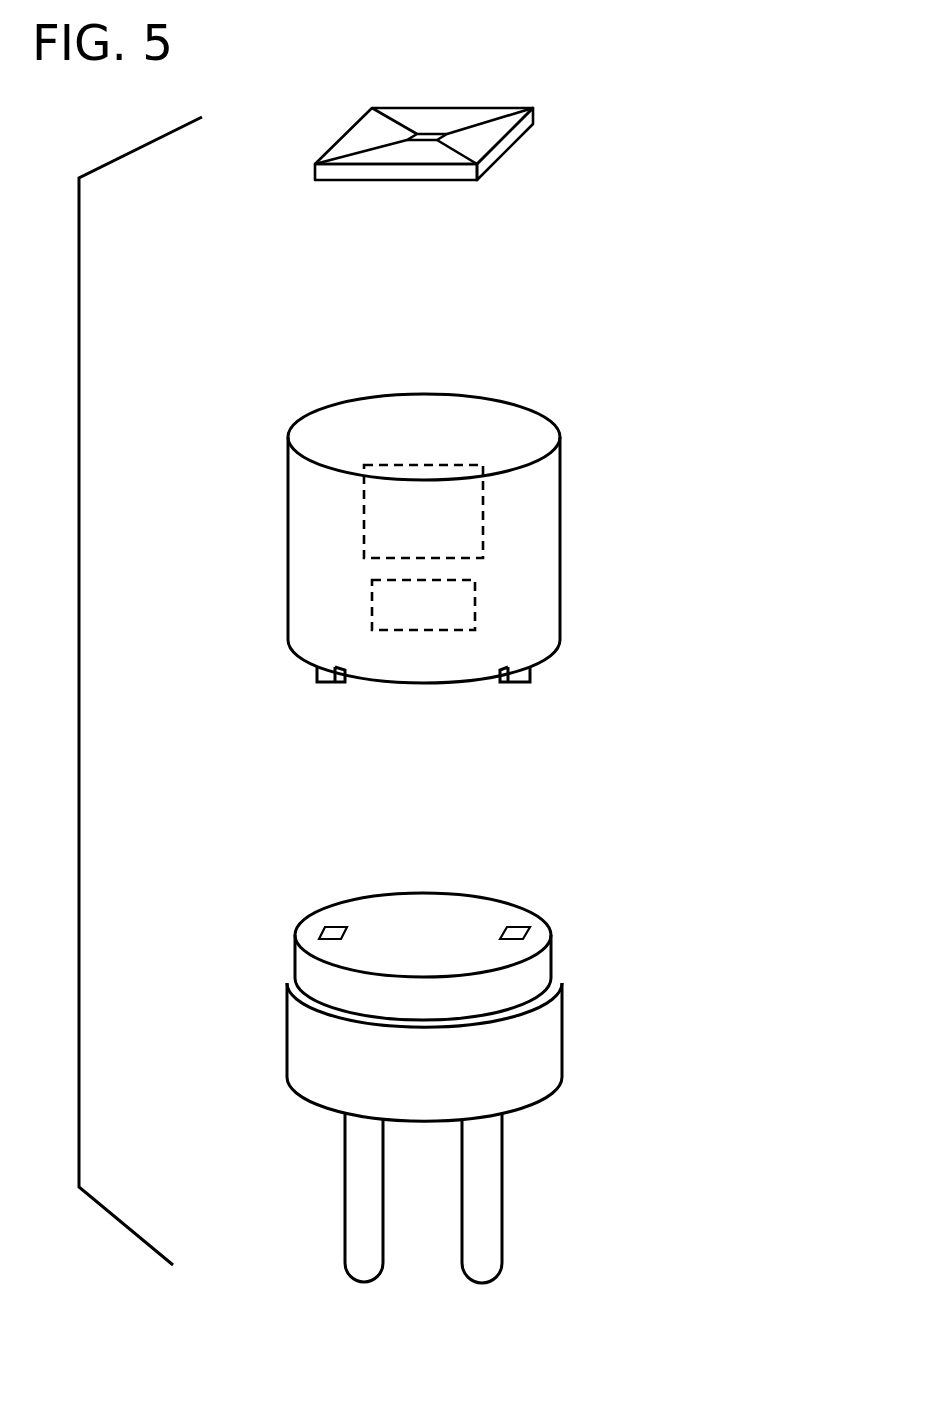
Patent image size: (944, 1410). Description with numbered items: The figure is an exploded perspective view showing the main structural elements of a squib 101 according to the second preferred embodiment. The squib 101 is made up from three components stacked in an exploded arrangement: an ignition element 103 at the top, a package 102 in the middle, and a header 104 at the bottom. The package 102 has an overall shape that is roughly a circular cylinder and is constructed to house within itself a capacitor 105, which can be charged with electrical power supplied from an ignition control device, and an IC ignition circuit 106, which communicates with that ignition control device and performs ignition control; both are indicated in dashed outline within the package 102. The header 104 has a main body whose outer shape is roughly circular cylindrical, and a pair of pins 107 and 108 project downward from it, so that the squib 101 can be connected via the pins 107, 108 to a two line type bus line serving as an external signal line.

The squib 101 is at (642, 390).
The package 102 is at (275, 538).
The ignition element 103 is at (300, 172).
The header 104 is at (275, 1032).
The capacitor 105 is at (475, 603).
The IC ignition circuit 106 is at (483, 510).
The pin 107 is at (363, 1276).
The pin 108 is at (482, 1276).